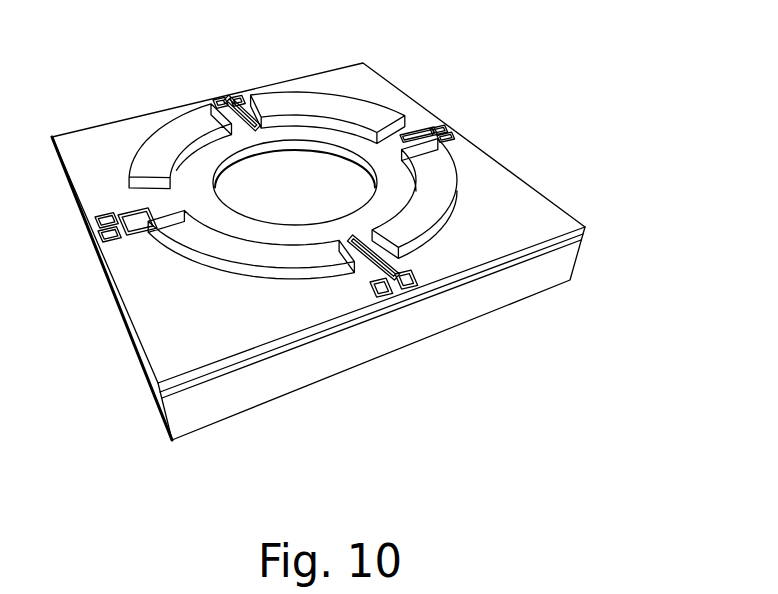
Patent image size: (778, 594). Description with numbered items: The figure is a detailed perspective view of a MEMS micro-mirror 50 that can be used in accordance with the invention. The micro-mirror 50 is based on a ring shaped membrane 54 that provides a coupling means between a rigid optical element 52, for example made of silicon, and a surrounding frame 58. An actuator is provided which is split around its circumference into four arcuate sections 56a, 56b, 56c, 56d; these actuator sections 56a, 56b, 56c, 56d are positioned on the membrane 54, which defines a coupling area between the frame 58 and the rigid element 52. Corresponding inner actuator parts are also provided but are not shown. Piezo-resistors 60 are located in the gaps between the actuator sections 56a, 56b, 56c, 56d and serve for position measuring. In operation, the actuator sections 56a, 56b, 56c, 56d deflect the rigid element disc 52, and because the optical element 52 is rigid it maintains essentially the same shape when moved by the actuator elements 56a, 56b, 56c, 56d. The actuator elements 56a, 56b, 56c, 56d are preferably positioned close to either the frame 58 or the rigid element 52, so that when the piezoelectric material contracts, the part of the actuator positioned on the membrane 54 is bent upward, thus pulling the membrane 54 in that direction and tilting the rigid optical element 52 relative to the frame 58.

The MEMS micro-mirror 50 is at (590, 181).
The rigid optical element 52 is at (278, 198).
The ring shaped membrane 54 is at (387, 150).
The actuator section 56a is at (440, 165).
The actuator section 56b is at (348, 105).
The actuator section 56c is at (148, 160).
The actuator section 56d is at (303, 272).
The frame 58 is at (500, 243).
The piezo-resistors 60 is at (418, 283).